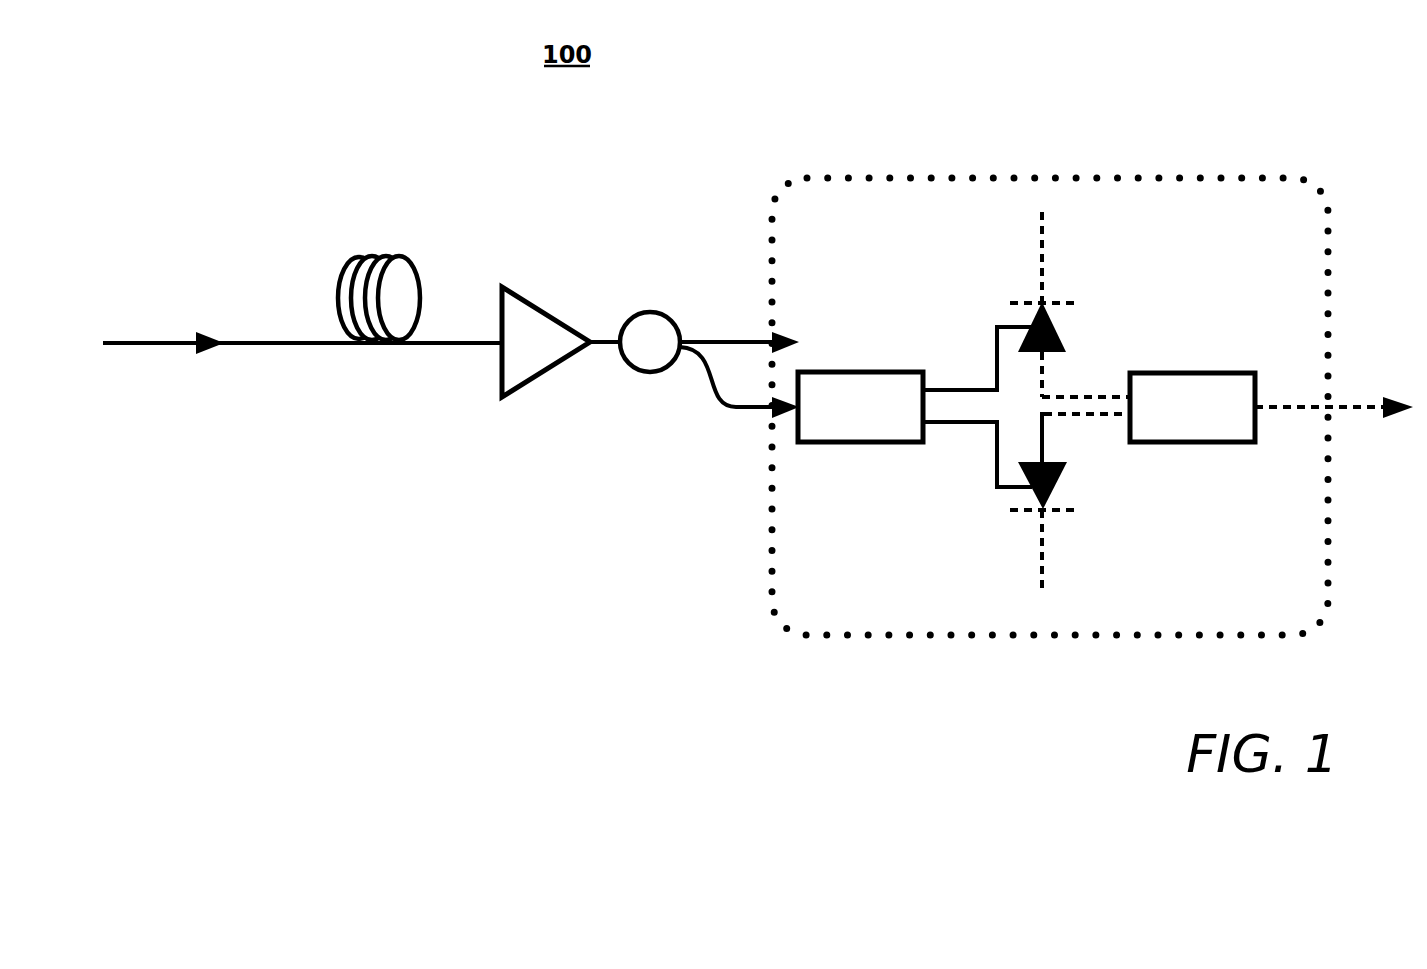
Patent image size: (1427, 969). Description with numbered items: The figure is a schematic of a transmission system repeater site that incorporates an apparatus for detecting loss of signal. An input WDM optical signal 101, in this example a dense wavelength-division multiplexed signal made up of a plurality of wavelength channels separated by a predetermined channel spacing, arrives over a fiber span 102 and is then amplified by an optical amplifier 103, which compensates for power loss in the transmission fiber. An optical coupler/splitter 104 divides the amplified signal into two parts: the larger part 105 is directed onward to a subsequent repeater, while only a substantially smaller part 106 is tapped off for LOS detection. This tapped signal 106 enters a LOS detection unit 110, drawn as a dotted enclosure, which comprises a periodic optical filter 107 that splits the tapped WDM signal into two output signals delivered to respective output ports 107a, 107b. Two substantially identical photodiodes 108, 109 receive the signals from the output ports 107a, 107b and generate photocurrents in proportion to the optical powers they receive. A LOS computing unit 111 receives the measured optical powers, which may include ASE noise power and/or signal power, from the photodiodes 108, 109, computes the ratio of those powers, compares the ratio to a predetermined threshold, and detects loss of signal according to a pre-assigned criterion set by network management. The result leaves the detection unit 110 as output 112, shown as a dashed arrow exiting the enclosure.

The input WDM optical signal 101 is at (148, 340).
The fiber span 102 is at (404, 258).
The optical amplifier 103 is at (548, 310).
The optical coupler/splitter 104 is at (632, 318).
The part of the amplified input WDM optical signal 105 is at (722, 340).
The input WDM optical signal (tapped part) 106 is at (708, 382).
The periodic optical filter 107 is at (852, 372).
The output port 107a is at (942, 388).
The output port 107b is at (944, 424).
The photodiode 108 is at (1064, 352).
The photodiode 109 is at (1058, 482).
The LOS detection unit 110 is at (1068, 178).
The LOS computing unit 111 is at (1236, 373).
The output signal 112 is at (1350, 410).